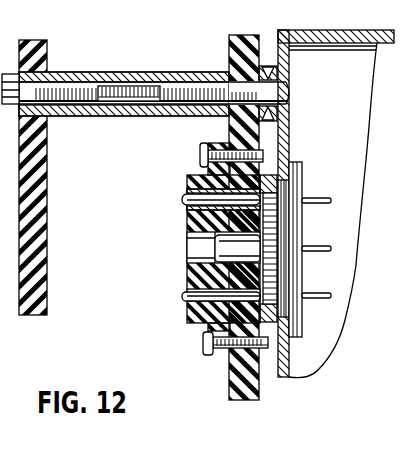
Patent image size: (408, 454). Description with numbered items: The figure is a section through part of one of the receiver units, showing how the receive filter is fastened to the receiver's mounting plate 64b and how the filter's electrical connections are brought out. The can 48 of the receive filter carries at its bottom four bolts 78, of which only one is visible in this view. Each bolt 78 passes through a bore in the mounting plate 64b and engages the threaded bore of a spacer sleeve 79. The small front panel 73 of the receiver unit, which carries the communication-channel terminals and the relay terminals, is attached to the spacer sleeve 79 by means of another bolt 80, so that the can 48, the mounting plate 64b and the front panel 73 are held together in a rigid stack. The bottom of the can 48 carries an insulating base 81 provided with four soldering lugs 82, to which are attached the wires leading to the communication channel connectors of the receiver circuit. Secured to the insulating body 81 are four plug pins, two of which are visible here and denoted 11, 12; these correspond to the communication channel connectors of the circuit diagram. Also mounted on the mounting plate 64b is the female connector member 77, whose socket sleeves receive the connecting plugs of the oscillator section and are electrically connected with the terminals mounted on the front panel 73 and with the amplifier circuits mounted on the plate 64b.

The plug pin 11 is at (182, 200).
The plug pin 12 is at (182, 296).
The can of the receive filter 48 is at (366, 31).
The mounting plate 64b is at (247, 27).
The front panel 73 is at (48, 270).
The female connector member 77 is at (189, 320).
The bolt 78 is at (209, 71).
The spacer sleeve 79 is at (145, 63).
The bolt 80 is at (75, 88).
The insulating base 81 is at (301, 172).
The soldering lugs 82 is at (338, 249).